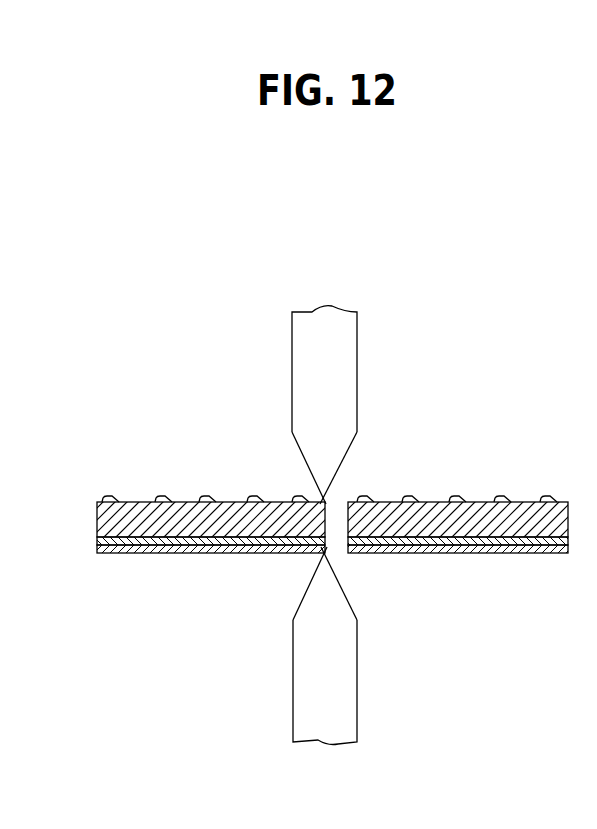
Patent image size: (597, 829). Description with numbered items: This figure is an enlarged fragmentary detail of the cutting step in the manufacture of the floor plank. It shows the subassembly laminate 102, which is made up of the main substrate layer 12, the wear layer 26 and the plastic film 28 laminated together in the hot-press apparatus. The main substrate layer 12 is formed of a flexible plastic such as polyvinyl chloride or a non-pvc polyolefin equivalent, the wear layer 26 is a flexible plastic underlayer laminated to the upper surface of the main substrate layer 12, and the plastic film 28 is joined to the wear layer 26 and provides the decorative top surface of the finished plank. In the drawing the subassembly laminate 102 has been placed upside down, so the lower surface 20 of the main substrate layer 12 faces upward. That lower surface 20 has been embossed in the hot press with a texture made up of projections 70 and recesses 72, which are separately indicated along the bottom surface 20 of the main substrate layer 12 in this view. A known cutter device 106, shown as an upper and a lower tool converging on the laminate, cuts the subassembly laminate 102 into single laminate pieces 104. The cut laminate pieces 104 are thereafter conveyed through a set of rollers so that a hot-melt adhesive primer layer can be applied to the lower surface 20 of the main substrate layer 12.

The main substrate layer 12 is at (97, 518).
The lower surface 20 is at (134, 500).
The wear layer 26 is at (97, 543).
The plastic film 28 is at (90, 555).
The projections 70 is at (213, 500).
The recesses 72 is at (282, 500).
The subassembly laminate 102 is at (200, 534).
The laminate pieces 104 is at (473, 555).
The cutter device 106 is at (329, 290).